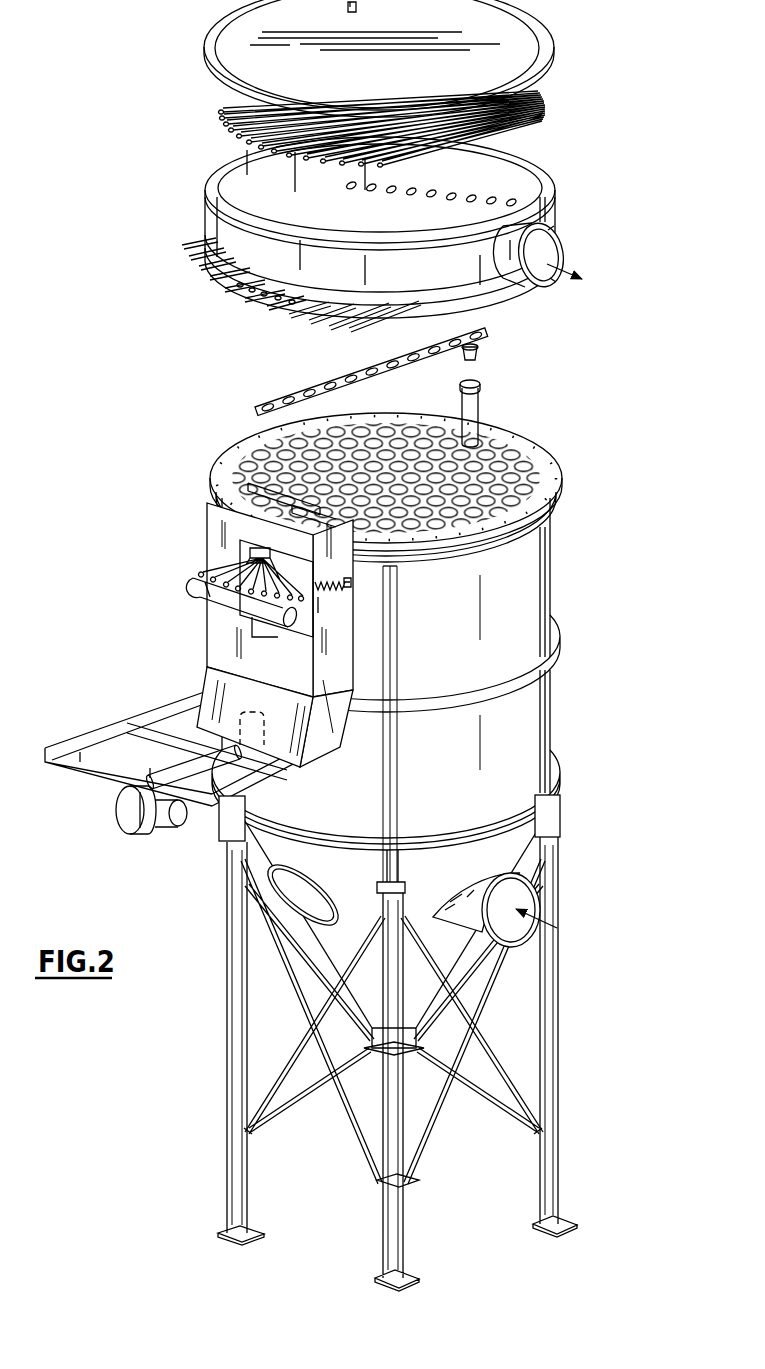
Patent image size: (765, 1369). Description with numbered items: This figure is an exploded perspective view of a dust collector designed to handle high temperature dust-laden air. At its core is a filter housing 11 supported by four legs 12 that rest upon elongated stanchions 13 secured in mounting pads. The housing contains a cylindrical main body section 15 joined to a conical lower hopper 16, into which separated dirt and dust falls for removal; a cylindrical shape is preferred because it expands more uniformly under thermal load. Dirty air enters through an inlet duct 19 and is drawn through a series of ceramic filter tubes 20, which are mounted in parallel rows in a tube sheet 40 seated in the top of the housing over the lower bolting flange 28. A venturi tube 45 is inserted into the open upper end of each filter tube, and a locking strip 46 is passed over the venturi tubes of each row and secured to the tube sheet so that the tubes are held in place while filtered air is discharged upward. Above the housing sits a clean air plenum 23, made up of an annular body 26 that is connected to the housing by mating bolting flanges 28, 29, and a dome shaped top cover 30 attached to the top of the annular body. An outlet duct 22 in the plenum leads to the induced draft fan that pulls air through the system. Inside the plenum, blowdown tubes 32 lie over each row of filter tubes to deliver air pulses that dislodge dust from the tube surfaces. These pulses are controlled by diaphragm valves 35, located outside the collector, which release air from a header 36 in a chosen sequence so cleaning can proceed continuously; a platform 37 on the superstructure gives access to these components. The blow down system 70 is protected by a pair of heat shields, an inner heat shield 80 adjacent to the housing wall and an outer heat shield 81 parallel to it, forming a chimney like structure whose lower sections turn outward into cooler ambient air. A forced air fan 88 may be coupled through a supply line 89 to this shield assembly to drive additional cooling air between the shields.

The filter housing 11 is at (556, 592).
The legs 12 is at (220, 823).
The stanchions 13 is at (230, 1140).
The main body section 15 is at (533, 720).
The lower hopper 16 is at (338, 938).
The inlet duct 19 is at (533, 870).
The filter tubes 20 is at (472, 403).
The outlet duct 22 is at (557, 233).
The clean air plenum 23 is at (203, 210).
The annular body 26 is at (273, 268).
The lower bolting flange 28 is at (547, 513).
The upper bolting flange 29 is at (288, 312).
The top cover 30 is at (518, 54).
The blowdown tubes 32 is at (222, 110).
The diaphragm valves 35 is at (202, 570).
The header 36 is at (193, 590).
The platform 37 is at (112, 720).
The tube sheet 40 is at (240, 434).
The venturi tube 45 is at (480, 362).
The locking strip 46 is at (490, 337).
The blow down system 70 is at (198, 522).
The inner heat shield 80 is at (337, 645).
The outer heat shield 81 is at (227, 648).
The forced air fan 88 is at (122, 813).
The supply line 89 is at (177, 768).